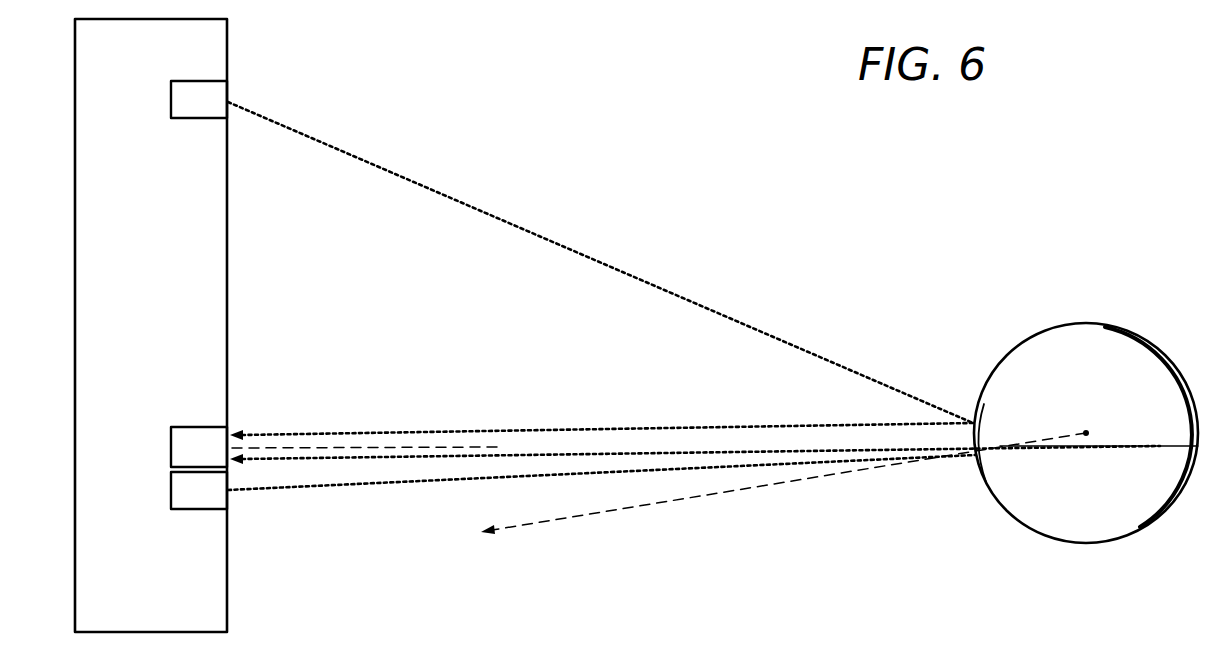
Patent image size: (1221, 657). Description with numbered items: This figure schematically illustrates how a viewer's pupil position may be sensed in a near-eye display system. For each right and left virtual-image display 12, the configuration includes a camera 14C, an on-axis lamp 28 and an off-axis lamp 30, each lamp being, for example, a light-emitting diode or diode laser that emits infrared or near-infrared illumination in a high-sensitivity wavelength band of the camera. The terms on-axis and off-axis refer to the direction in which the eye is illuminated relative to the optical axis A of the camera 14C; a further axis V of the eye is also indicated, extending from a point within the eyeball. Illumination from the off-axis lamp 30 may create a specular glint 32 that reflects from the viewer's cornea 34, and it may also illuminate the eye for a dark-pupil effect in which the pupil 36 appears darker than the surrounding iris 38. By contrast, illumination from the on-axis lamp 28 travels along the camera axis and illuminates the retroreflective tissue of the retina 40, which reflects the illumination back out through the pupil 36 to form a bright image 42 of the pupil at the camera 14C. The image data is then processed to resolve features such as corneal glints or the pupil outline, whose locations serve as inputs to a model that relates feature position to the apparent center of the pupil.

The virtual-image display 12 is at (162, 608).
The off-axis lamp 30 is at (212, 111).
The camera 14C is at (218, 459).
The on-axis lamp 28 is at (212, 504).
The specular glint 32 is at (652, 428).
The bright image of the pupil 42 is at (708, 454).
The optical axis A is at (367, 445).
The visual axis V is at (774, 489).
The cornea 34 is at (972, 473).
The iris 38 is at (990, 470).
The pupil 36 is at (1000, 439).
The retina 40 is at (1143, 343).